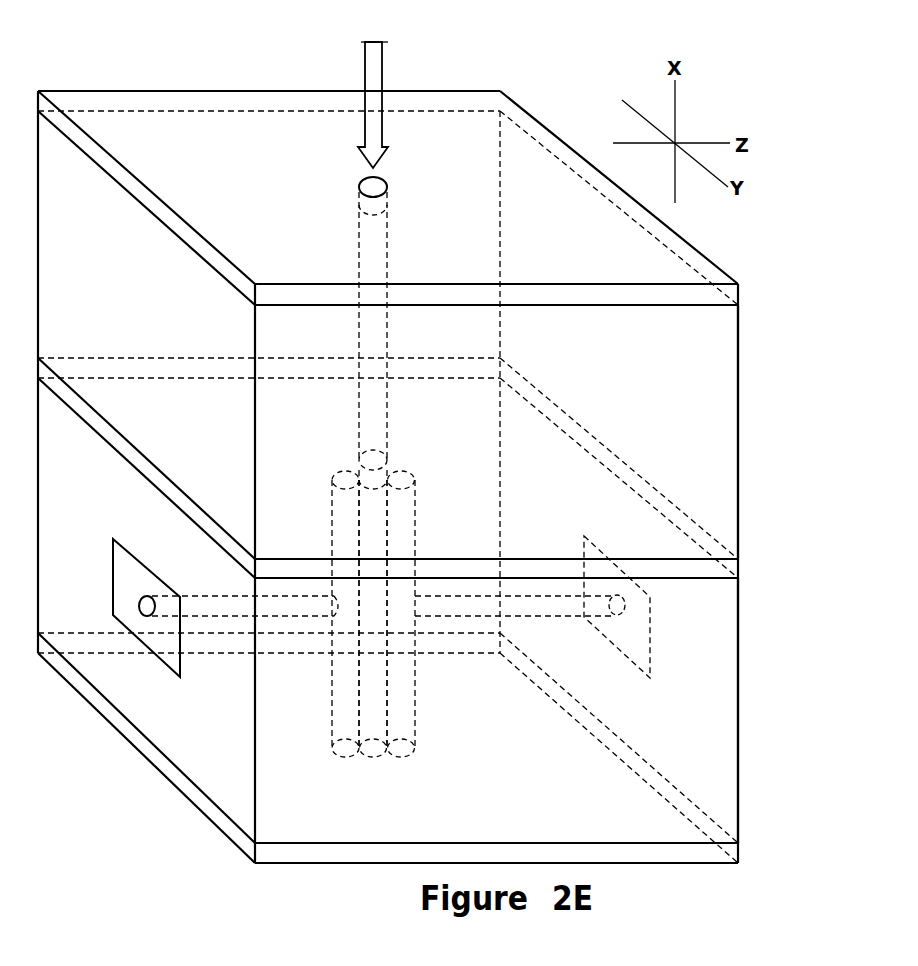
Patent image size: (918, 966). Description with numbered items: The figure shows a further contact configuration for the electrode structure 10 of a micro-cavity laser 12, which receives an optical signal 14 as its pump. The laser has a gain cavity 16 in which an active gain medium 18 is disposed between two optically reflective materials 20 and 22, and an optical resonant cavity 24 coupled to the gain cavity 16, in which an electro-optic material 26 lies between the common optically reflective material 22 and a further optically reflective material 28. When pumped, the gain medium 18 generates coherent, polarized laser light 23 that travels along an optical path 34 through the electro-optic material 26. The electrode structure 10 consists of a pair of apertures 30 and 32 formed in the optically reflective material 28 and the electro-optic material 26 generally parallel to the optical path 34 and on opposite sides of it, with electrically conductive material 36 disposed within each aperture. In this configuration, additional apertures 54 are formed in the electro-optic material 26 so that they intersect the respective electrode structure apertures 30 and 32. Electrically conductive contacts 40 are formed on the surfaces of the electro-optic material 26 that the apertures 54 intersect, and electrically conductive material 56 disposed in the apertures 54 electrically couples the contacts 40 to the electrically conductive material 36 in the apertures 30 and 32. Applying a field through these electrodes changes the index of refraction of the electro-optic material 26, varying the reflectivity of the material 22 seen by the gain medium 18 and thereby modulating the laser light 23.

The electrode structure 10 is at (419, 438).
The micro-cavity laser 12 is at (183, 63).
The optical signal 14 is at (383, 65).
The gain cavity 16 is at (760, 372).
The active gain medium 18 is at (738, 432).
The optically reflective material 20 is at (738, 297).
The optically reflective material 22 is at (738, 568).
The laser light 23 is at (388, 330).
The optical resonant cavity 24 is at (762, 659).
The electro-optic material 26 is at (738, 738).
The optically reflective material 28 is at (738, 853).
The aperture 30 is at (405, 528).
The aperture 32 is at (340, 530).
The optical path 34 is at (374, 698).
The electrically conductive material 36 is at (335, 475).
The electrically conductive contact 40 is at (128, 546).
The aperture 54 is at (200, 596).
The electrically conductive material 56 is at (138, 604).